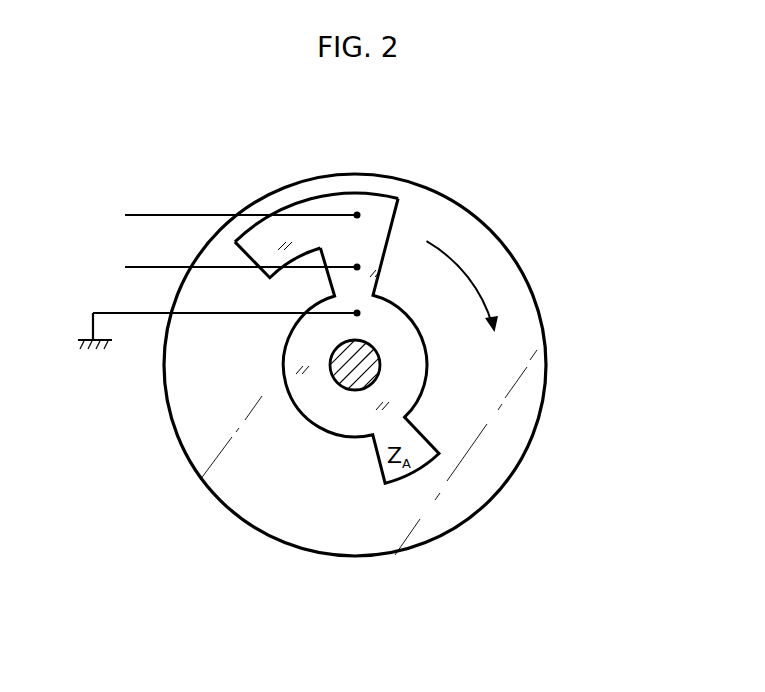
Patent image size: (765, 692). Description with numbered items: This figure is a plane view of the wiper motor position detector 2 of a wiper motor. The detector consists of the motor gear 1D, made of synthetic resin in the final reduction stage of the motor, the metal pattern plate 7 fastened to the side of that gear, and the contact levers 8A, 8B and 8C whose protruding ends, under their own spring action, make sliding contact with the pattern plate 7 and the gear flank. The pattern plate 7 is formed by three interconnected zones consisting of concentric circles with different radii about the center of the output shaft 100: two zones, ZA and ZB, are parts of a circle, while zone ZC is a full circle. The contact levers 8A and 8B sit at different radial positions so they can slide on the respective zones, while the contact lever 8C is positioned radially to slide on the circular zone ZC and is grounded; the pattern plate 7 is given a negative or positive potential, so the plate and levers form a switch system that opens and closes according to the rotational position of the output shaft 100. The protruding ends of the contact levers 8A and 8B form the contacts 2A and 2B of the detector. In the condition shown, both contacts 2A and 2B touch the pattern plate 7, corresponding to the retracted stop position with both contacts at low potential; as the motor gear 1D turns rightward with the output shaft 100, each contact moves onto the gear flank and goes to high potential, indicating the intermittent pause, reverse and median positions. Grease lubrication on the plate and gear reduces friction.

The wiper motor position detector 2 is at (214, 507).
The motor gear 1D is at (517, 302).
The contact 2A is at (360, 265).
The contact 2B is at (358, 213).
The pattern plate 7 is at (382, 207).
The contact lever 8B is at (145, 213).
The contact lever 8A is at (145, 266).
The contact lever 8C is at (150, 313).
The output shaft 100 is at (372, 376).